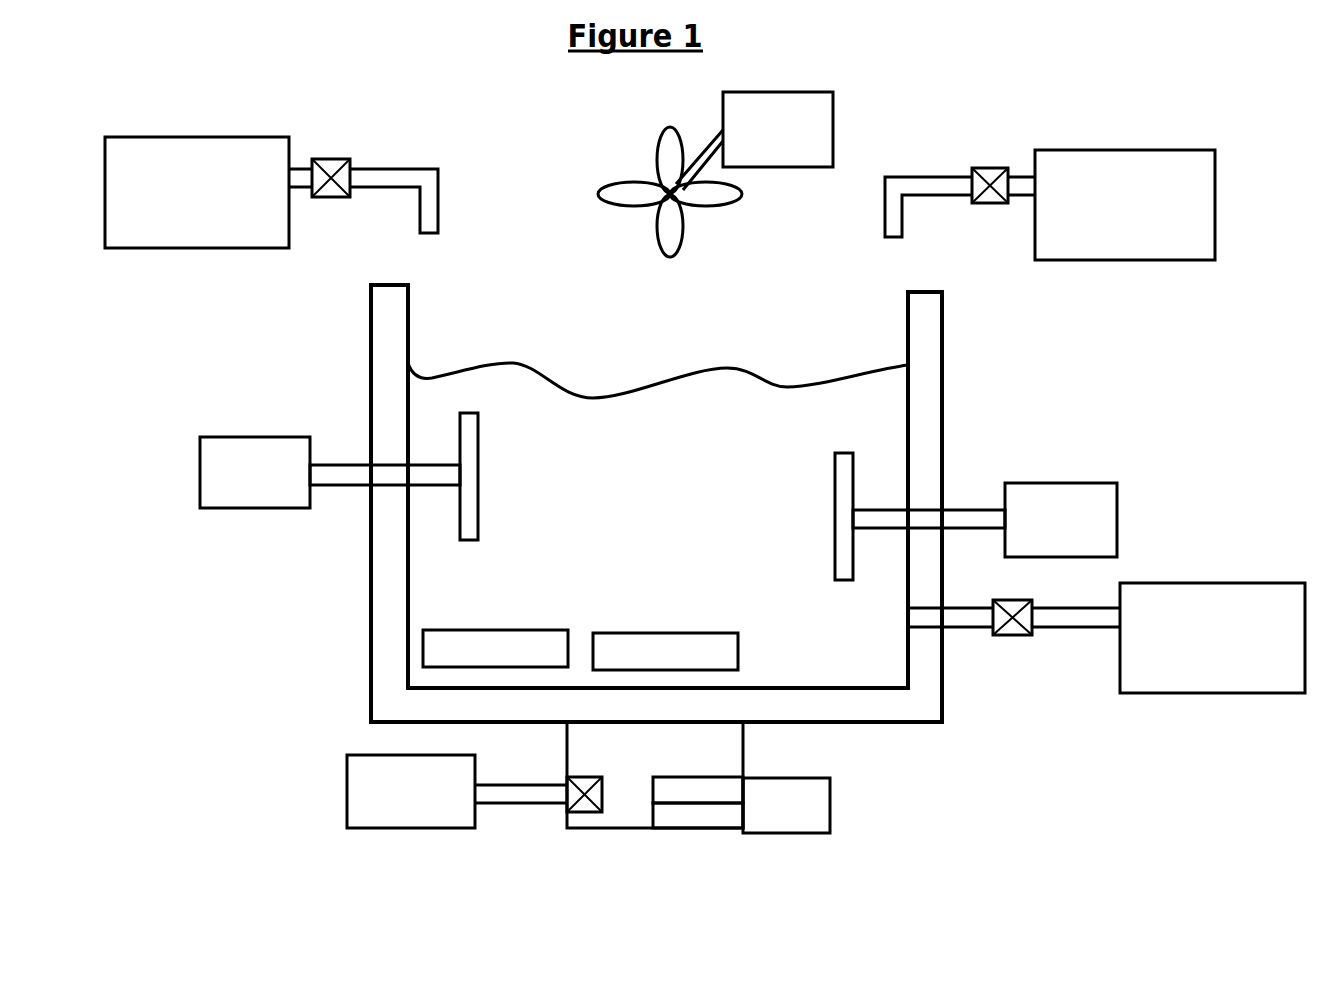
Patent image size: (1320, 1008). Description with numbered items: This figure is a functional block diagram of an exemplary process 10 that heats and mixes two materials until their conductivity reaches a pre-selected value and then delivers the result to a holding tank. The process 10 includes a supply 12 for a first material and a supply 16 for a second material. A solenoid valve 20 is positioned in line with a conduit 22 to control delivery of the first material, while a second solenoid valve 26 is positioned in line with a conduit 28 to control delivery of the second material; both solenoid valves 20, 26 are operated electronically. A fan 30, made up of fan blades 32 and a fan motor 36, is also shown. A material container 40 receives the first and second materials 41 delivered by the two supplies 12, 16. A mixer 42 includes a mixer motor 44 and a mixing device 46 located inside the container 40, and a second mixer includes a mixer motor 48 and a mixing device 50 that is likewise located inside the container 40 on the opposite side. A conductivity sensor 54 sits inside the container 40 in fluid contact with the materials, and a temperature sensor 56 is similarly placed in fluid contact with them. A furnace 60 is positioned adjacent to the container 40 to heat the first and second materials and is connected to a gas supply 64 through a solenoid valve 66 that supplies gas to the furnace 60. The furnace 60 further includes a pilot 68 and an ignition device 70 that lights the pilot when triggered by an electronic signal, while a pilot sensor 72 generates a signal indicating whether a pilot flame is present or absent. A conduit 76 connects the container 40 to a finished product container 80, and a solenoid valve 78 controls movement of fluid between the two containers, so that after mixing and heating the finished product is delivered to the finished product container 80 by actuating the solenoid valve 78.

The process 10 is at (962, 91).
The supply 12 is at (207, 135).
The supply 16 is at (1080, 148).
The solenoid valve 20 is at (332, 158).
The conduit 22 is at (403, 168).
The second solenoid valve 26 is at (990, 168).
The conduit 28 is at (938, 175).
The fan 30 is at (590, 118).
The fan blades 32 is at (683, 245).
The fan motor 36 is at (833, 110).
The material container 40 is at (945, 422).
The first and second materials 41 is at (637, 470).
The mixer 42 is at (332, 412).
The mixer motor 44 is at (247, 509).
The mixing device 46 is at (478, 495).
The mixer motor 48 is at (1055, 483).
The mixing device 50 is at (840, 453).
The conductivity sensor 54 is at (667, 633).
The temperature sensor 56 is at (500, 630).
The furnace 60 is at (743, 752).
The gas supply 64 is at (420, 829).
The solenoid valve 66 is at (583, 813).
The pilot 68 is at (727, 790).
The ignition device 70 is at (685, 829).
The pilot sensor 72 is at (830, 807).
The conduit 76 is at (1052, 628).
The solenoid valve 78 is at (1007, 636).
The finished product container 80 is at (1187, 694).